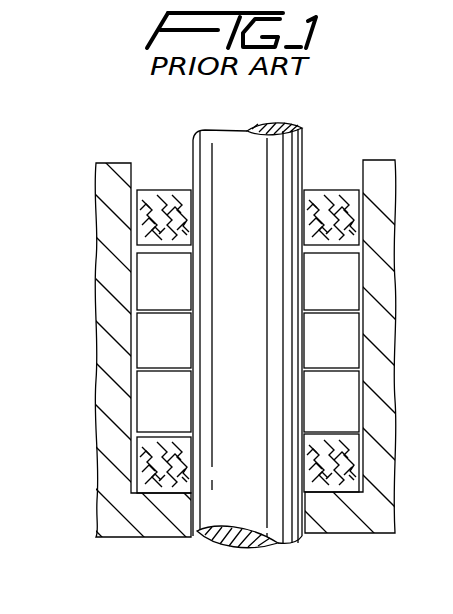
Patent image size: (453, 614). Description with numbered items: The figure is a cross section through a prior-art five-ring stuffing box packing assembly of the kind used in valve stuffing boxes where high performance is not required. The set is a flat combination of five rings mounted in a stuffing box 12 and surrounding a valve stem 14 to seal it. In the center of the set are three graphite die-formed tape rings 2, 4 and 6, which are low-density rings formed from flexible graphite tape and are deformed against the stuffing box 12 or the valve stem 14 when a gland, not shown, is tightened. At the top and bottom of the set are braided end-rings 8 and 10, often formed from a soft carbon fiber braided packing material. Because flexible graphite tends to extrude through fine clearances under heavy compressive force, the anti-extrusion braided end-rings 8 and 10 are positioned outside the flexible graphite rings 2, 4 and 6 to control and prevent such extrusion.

The graphite die-formed tape ring 2 is at (340, 276).
The graphite die-formed tape ring 4 is at (350, 338).
The graphite die-formed tape ring 6 is at (350, 395).
The braided end-ring 8 is at (350, 211).
The braided end-ring 10 is at (345, 462).
The stuffing box 12 is at (108, 491).
The valve stem 14 is at (303, 133).